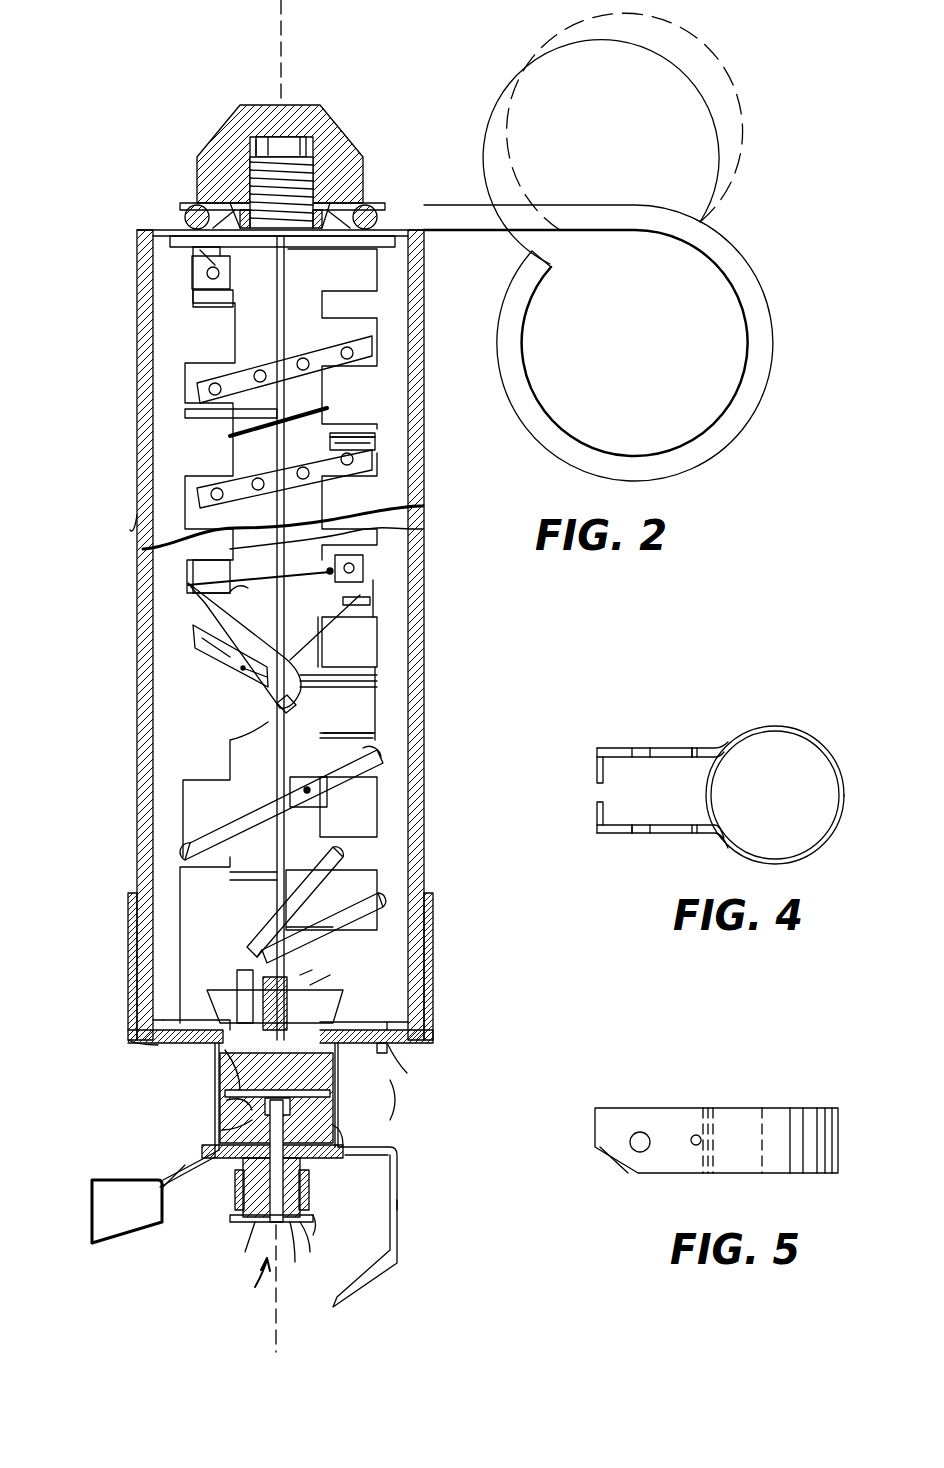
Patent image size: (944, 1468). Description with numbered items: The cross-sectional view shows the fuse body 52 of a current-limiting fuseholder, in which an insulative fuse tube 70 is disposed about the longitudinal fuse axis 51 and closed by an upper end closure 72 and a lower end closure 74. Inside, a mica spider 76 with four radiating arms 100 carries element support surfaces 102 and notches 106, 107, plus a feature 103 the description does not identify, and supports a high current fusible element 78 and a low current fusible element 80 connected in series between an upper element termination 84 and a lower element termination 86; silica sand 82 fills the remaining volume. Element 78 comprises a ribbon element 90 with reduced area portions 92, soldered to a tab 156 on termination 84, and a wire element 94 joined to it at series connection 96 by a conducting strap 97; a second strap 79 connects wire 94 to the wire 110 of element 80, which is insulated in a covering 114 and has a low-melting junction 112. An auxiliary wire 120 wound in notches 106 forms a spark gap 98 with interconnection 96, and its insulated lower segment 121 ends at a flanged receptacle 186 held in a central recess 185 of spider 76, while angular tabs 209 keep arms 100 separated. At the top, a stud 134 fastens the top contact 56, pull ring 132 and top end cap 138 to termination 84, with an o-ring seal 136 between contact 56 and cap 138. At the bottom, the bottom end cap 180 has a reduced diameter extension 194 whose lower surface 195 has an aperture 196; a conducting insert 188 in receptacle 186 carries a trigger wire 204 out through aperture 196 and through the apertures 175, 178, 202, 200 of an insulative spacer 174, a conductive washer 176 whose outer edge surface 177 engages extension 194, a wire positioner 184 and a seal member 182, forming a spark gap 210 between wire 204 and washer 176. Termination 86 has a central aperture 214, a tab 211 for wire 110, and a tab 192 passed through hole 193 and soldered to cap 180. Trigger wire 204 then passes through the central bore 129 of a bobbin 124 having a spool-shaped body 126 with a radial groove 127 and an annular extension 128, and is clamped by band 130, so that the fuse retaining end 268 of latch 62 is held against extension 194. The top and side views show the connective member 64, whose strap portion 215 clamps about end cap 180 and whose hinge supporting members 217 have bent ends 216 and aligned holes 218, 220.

In FIG. 2, the longitudinal fuse axis 51 is at (281, 40).
In FIG. 2, the fuse body 52 is at (105, 456).
In FIG. 2, the top contact 56 is at (335, 150).
In FIG. 2, the latch 62 is at (100, 1160).
In FIG. 4, the connective member 64 is at (798, 730).
In FIG. 5, the connective member 64 is at (734, 1088).
In FIG. 2, the fuse tube 70 is at (138, 518).
In FIG. 2, the upper end closure 72 is at (132, 196).
In FIG. 2, the lower end closure 74 is at (106, 1026).
In FIG. 2, the spider 76 is at (348, 432).
In FIG. 2, the high current fusible element 78 is at (328, 440).
In FIG. 2, the copper conducting strap 79 is at (230, 680).
In FIG. 2, the low current fusible element 80 is at (282, 707).
In FIG. 2, the silica sand 82 is at (190, 438).
In FIG. 2, the upper element termination 84 is at (410, 248).
In FIG. 2, the lower element termination 86 is at (395, 1050).
In FIG. 2, the ribbon element 90 is at (310, 355).
In FIG. 2, the reduced area portions 92 is at (255, 365).
In FIG. 2, the wire element 94 is at (210, 606).
In FIG. 2, the series connection 96 is at (410, 517).
In FIG. 2, the copper conducting strap 97 is at (315, 604).
In FIG. 2, the spark gap 98 is at (379, 610).
In FIG. 2, the arms 100 is at (428, 716).
In FIG. 2, the element support surfaces 102 is at (188, 372).
In FIG. 2, the recess 103 is at (360, 608).
In FIG. 2, the notches 106 is at (382, 396).
In FIG. 2, the notch 107 is at (354, 665).
In FIG. 2, the conducting wire 110 is at (300, 826).
In FIG. 2, the junction 112 is at (301, 782).
In FIG. 2, the silicone rubber covering 114 is at (376, 900).
In FIG. 2, the auxiliary wire 120 is at (193, 250).
In FIG. 2, the lower segment 121 is at (328, 860).
In FIG. 2, the bobbin 124 is at (290, 1250).
In FIG. 2, the spool-shaped body 126 is at (308, 1228).
In FIG. 2, the radially formed groove 127 is at (253, 1250).
In FIG. 2, the annular extension 128 is at (318, 1215).
In FIG. 2, the central aperture 129 is at (249, 1292).
In FIG. 2, the clamping band 130 is at (260, 1230).
In FIG. 2, the pull ring 132 is at (654, 226).
In FIG. 2, the stud 134 is at (265, 148).
In FIG. 2, the o-ring seal 136 is at (224, 200).
In FIG. 2, the top end cap 138 is at (190, 290).
In FIG. 2, the conducting tab 156 is at (223, 294).
In FIG. 2, the insulative spacer 174 is at (311, 1190).
In FIG. 2, the central aperture 175 is at (303, 1175).
In FIG. 2, the conductive washer 176 is at (388, 1156).
In FIG. 2, the outer edge surface 177 is at (348, 1127).
In FIG. 2, the central aperture 178 is at (328, 1108).
In FIG. 2, the bottom end cap 180 is at (418, 1029).
In FIG. 2, the seal member 182 is at (230, 1052).
In FIG. 2, the wire positioner 184 is at (225, 1122).
In FIG. 2, the central recess 185 is at (338, 983).
In FIG. 2, the flanged receptacle 186 is at (298, 976).
In FIG. 2, the conducting insert 188 is at (322, 1065).
In FIG. 2, the conducting tab 192 is at (402, 1045).
In FIG. 2, the hole 193 is at (409, 1100).
In FIG. 2, the reduced diameter extension 194 is at (333, 1092).
In FIG. 2, the lower surface 195 is at (235, 1185).
In FIG. 2, the aperture 196 is at (227, 1210).
In FIG. 2, the central aperture 200 is at (230, 1100).
In FIG. 2, the central aperture 202 is at (197, 1147).
In FIG. 2, the trigger wire 204 is at (228, 1022).
In FIG. 2, the angular tabs 209 is at (358, 1008).
In FIG. 2, the spark gap 210 is at (150, 1189).
In FIG. 2, the conducting tab 211 is at (237, 971).
In FIG. 2, the central aperture 214 is at (218, 1048).
In FIG. 4, the strap portion 215 is at (835, 782).
In FIG. 5, the strap portion 215 is at (782, 1122).
In FIG. 4, the ends 216 is at (597, 772).
In FIG. 4, the hinge supporting members 217 is at (712, 830).
In FIG. 5, the hinge supporting members 217 is at (663, 1120).
In FIG. 4, the aligned holes 218 is at (632, 834).
In FIG. 5, the aligned holes 218 is at (632, 1163).
In FIG. 4, the aligned holes 220 is at (700, 725).
In FIG. 5, the aligned holes 220 is at (693, 1145).
In FIG. 2, the fuse retaining end 268 is at (396, 1208).